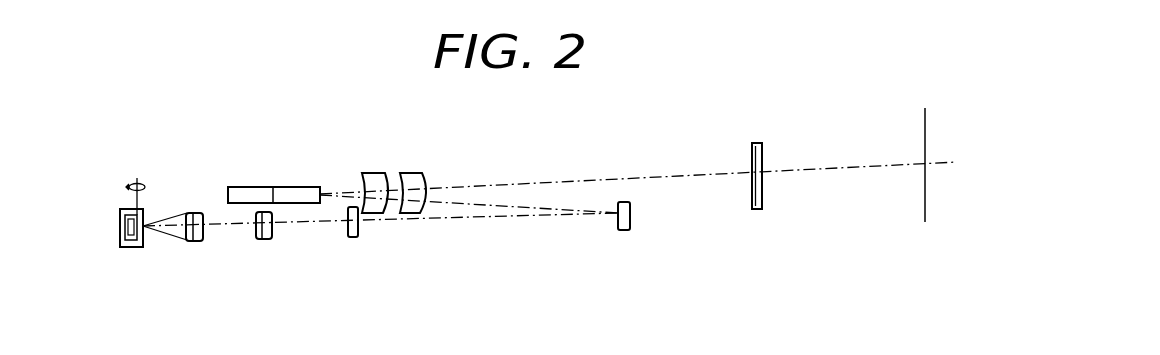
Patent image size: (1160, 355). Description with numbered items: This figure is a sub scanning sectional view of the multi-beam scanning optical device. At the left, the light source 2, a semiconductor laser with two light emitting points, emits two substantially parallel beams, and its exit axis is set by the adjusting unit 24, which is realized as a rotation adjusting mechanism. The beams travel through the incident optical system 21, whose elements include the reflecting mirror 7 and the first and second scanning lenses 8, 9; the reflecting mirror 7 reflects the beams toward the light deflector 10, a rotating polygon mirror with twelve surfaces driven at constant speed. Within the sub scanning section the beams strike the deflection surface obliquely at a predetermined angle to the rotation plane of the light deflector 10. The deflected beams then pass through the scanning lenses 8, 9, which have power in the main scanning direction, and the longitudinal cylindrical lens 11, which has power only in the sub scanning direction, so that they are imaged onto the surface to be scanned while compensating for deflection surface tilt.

The light source 2 is at (120, 228).
The adjusting unit 24 is at (127, 209).
The light deflector 10 is at (260, 190).
The incident optical system 21 is at (384, 143).
The first scanning lens 8 is at (370, 177).
The second scanning lens 9 is at (411, 177).
The reflecting mirror 7 is at (625, 231).
The longitudinal cylindrical lens 11 is at (758, 143).